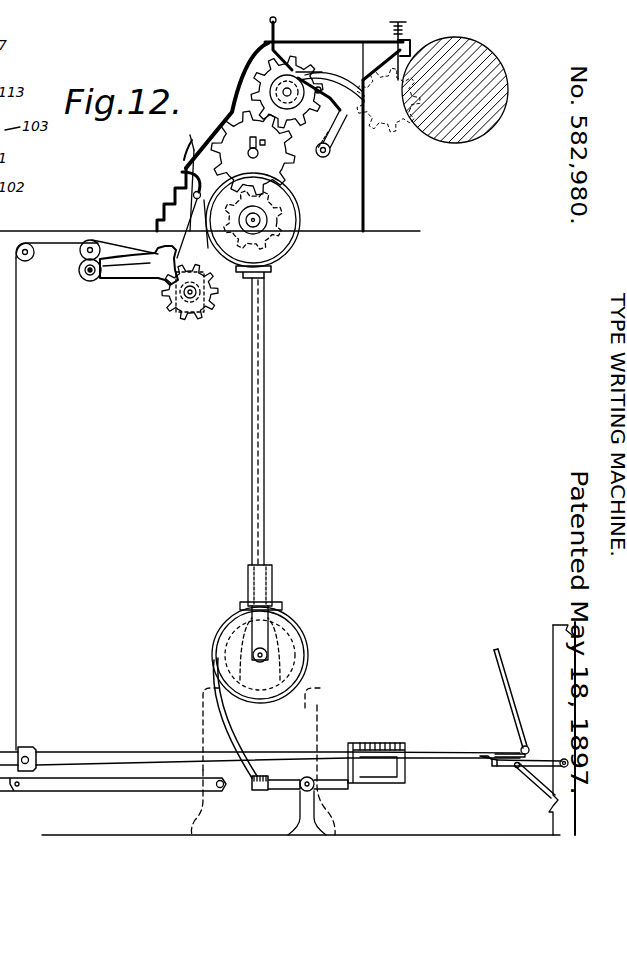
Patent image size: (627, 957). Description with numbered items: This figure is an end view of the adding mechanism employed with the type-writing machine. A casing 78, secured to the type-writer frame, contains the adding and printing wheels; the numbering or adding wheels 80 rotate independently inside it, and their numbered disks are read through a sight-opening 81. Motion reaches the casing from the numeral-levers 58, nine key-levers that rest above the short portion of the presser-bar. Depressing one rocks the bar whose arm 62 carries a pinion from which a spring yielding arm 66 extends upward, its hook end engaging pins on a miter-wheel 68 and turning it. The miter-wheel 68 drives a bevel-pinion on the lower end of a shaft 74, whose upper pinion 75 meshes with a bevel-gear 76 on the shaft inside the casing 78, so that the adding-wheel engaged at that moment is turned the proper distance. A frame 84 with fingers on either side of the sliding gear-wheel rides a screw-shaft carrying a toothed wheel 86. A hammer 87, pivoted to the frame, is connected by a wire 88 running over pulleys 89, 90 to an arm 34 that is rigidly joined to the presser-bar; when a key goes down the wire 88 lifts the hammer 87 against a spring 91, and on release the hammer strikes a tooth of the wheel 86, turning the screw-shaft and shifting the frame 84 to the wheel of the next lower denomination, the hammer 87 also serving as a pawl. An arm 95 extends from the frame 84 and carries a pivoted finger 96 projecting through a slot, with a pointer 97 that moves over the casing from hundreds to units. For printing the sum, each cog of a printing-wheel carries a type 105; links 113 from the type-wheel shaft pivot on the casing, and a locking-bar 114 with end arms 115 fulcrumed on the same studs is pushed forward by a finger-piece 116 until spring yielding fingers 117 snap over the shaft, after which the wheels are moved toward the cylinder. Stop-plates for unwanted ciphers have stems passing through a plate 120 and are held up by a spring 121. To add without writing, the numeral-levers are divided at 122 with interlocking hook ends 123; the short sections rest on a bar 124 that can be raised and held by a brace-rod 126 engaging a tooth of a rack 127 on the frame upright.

The finger-piece 116 is at (270, 31).
The locking-bar 114 is at (290, 60).
The spring yielding fingers 117 is at (326, 80).
The spring 121 is at (404, 26).
The plate 120 is at (412, 43).
The type 105 is at (400, 105).
The links 113 is at (348, 140).
The arms 115 is at (330, 157).
The gear-wheels of the adding-wheels 80 is at (288, 176).
The sight-opening 81 is at (196, 146).
The pointer 97 is at (172, 148).
The finger 96 is at (182, 156).
The casing 78 is at (184, 174).
The arm 95 is at (172, 210).
The bevel-gear 76 is at (302, 244).
The pinion 75 is at (276, 270).
The frame 84 is at (250, 262).
The shaft 74 is at (264, 482).
The miter-wheel 68 is at (310, 648).
The spring yielding arm 66 is at (232, 728).
The toothed wheel 86 is at (186, 318).
The hammer 87 is at (116, 278).
The pulley 89 is at (90, 240).
The spring 91 is at (112, 240).
The pulley 90 is at (31, 258).
The wire 88 is at (18, 432).
The numeral-levers 58 is at (128, 748).
The arm 34 is at (113, 796).
The arm 62 is at (340, 790).
The division of the numeral key-levers 122 is at (466, 755).
The hook ends 123 is at (540, 758).
The bar 124 is at (490, 762).
The brace-rod 126 is at (530, 785).
The rack 127 is at (556, 802).